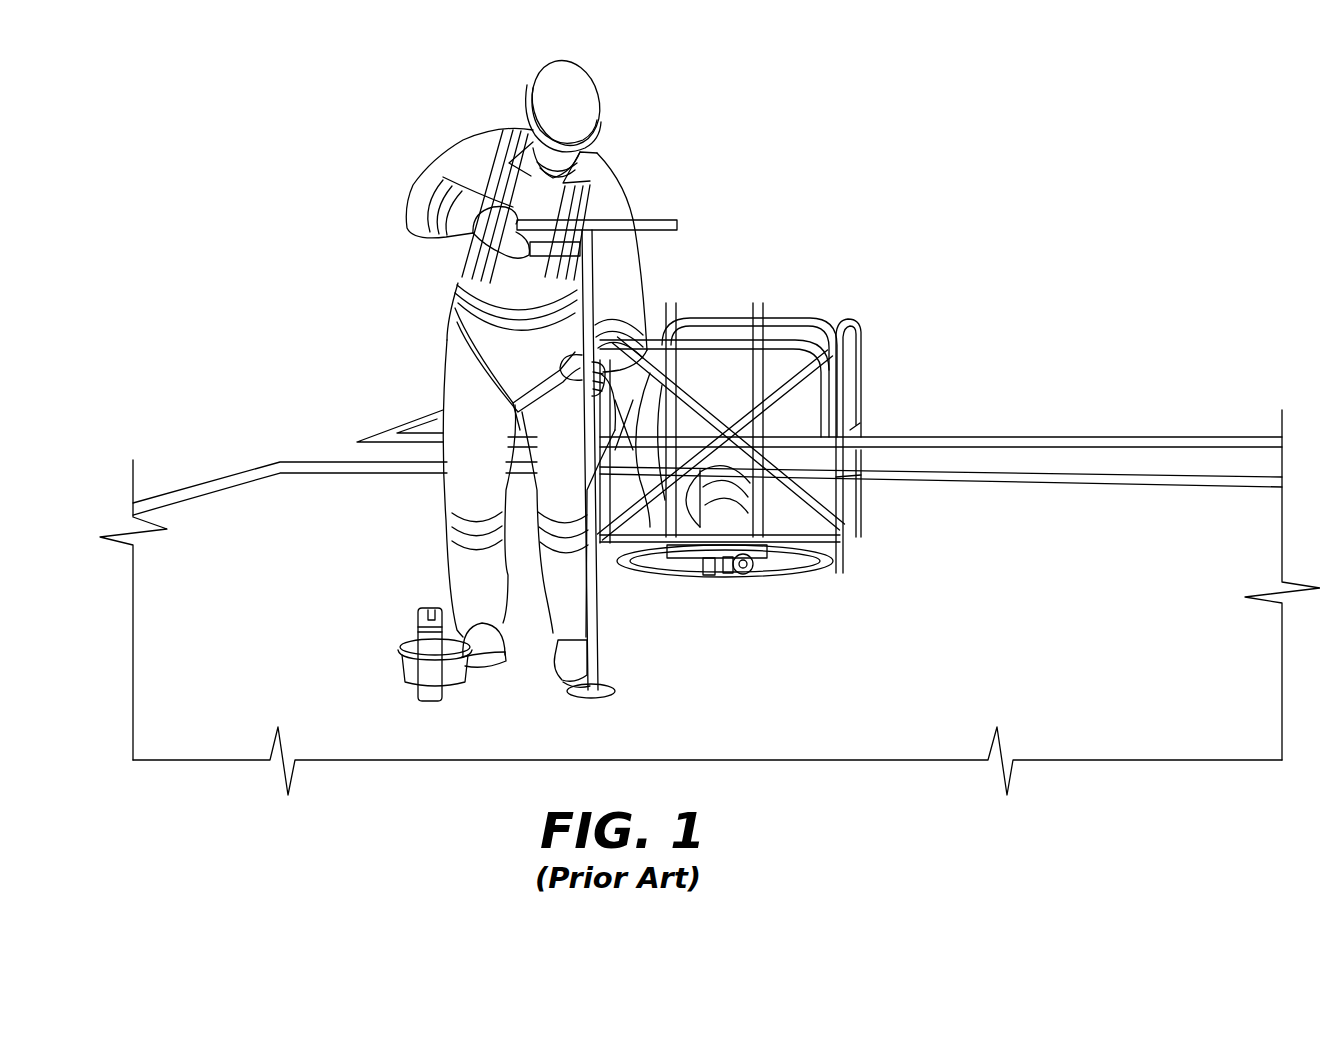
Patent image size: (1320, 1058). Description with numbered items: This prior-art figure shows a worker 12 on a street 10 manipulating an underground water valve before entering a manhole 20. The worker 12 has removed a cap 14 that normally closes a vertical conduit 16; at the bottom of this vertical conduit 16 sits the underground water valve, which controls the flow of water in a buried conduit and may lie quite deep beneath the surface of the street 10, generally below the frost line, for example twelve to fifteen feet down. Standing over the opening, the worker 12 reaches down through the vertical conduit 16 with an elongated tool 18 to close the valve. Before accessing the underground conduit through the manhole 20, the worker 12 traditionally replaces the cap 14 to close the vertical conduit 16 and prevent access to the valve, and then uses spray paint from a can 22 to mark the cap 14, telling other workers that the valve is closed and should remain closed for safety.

The street 10 is at (1151, 578).
The worker 12 is at (440, 303).
The cap 14 is at (477, 668).
The vertical conduit 16 is at (622, 692).
The elongated tool 18 is at (600, 582).
The manhole 20 is at (793, 557).
The can 22 is at (407, 638).